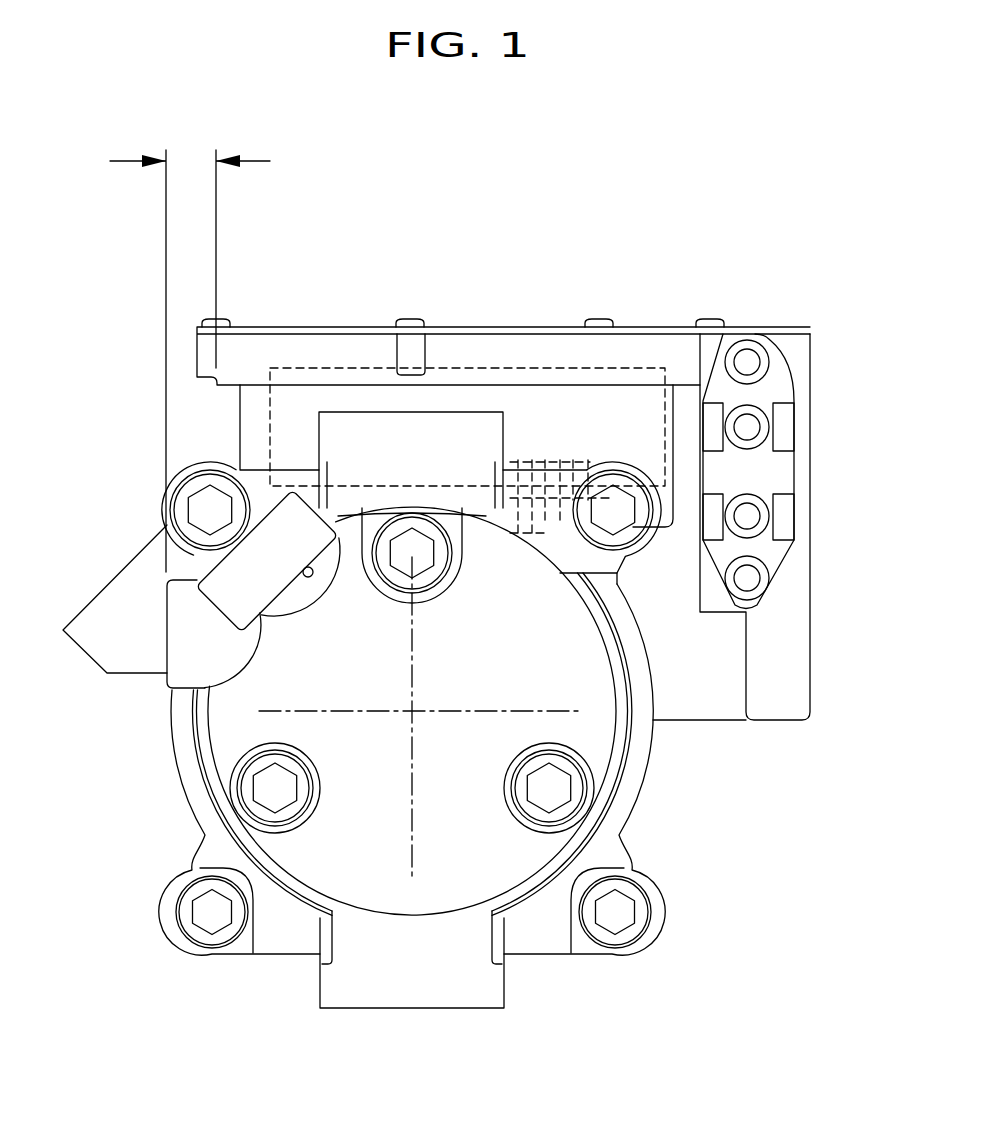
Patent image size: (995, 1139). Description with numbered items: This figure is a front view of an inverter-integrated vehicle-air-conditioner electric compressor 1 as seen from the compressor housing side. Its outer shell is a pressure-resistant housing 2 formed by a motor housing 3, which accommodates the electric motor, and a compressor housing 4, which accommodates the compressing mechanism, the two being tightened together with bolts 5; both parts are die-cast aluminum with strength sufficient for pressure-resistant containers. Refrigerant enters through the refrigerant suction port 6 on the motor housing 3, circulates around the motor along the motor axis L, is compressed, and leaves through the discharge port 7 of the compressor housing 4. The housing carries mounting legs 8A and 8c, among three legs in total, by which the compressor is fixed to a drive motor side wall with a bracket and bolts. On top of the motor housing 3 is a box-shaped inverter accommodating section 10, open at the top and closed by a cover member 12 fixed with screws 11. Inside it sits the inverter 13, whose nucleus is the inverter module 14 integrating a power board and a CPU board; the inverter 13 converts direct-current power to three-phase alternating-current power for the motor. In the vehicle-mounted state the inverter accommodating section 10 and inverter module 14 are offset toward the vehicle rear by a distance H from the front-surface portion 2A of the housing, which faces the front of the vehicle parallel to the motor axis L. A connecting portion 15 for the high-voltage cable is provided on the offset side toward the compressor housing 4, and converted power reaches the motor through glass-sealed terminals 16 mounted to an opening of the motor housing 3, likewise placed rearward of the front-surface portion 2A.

The vehicle-air-conditioner electric compressor 1 is at (789, 194).
The housing 2 is at (667, 790).
The front-surface portion 2A is at (188, 643).
The motor housing 3 is at (170, 738).
The compressor housing 4 is at (317, 855).
The bolts 5 is at (618, 912).
The refrigerant suction port 6 is at (227, 605).
The discharge port 7 is at (108, 603).
The mounting leg 8A is at (465, 990).
The mounting leg 8c is at (377, 434).
The inverter accommodating section 10 is at (302, 348).
The screws 11 is at (712, 318).
The cover member 12 is at (568, 327).
The inverter 13 is at (507, 343).
The inverter module 14 is at (455, 366).
The connecting portion 15 is at (797, 471).
The glass-sealed terminals 16 is at (548, 550).
The distance H is at (190, 345).
The motor axis L is at (405, 705).